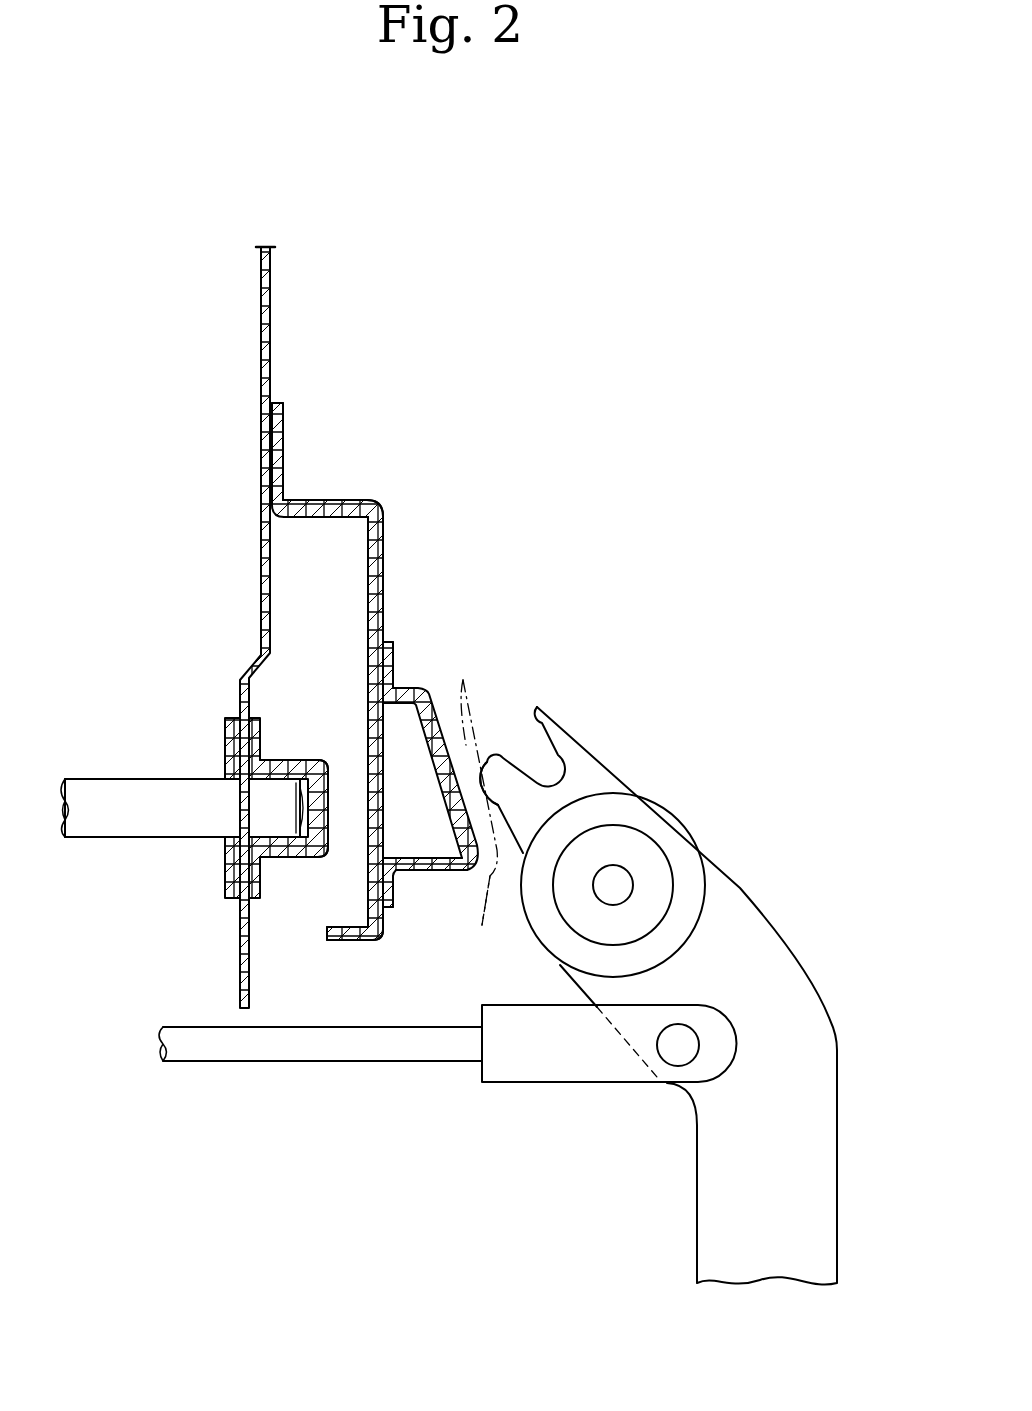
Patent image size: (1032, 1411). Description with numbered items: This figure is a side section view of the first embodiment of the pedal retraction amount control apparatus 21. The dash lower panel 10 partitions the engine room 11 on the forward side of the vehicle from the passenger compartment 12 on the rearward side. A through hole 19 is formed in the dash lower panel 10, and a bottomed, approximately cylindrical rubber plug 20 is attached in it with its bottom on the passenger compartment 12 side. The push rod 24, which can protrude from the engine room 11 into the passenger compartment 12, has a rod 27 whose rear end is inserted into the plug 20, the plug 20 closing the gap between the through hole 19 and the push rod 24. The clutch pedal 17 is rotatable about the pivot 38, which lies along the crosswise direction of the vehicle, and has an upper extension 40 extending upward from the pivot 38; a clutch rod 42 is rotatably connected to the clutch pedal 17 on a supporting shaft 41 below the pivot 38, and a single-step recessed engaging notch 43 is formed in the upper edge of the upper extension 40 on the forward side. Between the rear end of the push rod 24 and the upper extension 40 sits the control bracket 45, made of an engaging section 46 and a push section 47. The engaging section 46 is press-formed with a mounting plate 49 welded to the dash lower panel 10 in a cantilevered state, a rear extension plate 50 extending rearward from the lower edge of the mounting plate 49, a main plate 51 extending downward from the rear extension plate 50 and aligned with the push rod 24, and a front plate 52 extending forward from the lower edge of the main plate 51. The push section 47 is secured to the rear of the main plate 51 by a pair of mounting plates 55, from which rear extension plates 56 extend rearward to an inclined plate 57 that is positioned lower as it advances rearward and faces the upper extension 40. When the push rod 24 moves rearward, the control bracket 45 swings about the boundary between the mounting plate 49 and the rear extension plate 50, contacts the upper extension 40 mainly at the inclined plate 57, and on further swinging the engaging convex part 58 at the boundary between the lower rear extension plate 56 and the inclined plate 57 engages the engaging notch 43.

The dash lower panel 10 is at (260, 332).
The engine room 11 is at (122, 318).
The passenger compartment 12 is at (380, 348).
The clutch pedal 17 is at (800, 968).
The through hole 19 is at (227, 760).
The rubber plug 20 is at (282, 762).
The pedal retraction amount control apparatus 21 is at (460, 563).
The push rod 24 is at (90, 777).
The rod 27 is at (118, 823).
The pivot 38 is at (630, 867).
The upper extension 40 is at (580, 757).
The supporting shaft 41 is at (665, 1052).
The clutch rod 42 is at (273, 1062).
The engaging notch 43 is at (503, 757).
The control bracket 45 is at (363, 477).
The engaging section 46 is at (320, 500).
The push section 47 is at (428, 685).
The mounting plate 49 is at (283, 427).
The rear extension plate 50 is at (296, 520).
The main plate 51 is at (383, 540).
The front plate 52 is at (348, 942).
The mounting plates 55 is at (393, 655).
The rear extension plates 56 is at (418, 857).
The inclined plate 57 is at (443, 745).
The engaging convex part 58 is at (480, 900).